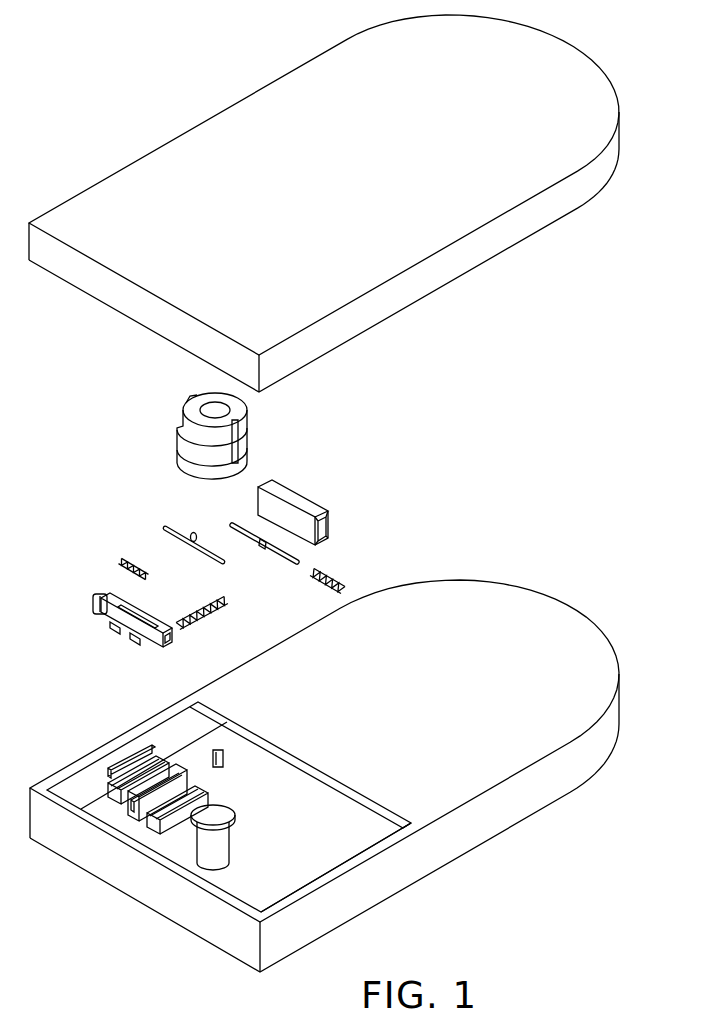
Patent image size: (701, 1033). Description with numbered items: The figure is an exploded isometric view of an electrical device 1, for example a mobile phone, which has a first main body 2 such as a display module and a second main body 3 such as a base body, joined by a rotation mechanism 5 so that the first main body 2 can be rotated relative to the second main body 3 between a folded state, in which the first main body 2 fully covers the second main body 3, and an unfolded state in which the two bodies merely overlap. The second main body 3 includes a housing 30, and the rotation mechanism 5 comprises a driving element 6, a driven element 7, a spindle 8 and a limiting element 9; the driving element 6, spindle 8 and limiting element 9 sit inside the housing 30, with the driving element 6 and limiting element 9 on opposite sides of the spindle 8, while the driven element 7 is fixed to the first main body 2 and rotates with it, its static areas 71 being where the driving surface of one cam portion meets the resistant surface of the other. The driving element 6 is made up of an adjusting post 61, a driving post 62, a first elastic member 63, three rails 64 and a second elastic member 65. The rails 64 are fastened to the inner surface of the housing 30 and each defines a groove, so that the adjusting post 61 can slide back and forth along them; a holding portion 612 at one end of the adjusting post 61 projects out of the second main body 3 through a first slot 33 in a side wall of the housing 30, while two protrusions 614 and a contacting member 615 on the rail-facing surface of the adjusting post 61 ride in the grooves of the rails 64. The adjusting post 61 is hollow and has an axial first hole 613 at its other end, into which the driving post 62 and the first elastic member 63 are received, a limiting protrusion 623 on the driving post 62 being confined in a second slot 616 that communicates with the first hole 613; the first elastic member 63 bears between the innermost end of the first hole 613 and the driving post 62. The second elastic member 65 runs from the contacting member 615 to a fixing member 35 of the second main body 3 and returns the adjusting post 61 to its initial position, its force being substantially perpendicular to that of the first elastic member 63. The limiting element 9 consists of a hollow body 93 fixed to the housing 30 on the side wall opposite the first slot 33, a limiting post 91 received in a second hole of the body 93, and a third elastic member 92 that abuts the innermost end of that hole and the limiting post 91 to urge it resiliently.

The electrical device 1 is at (101, 45).
The first main body 2 is at (557, 88).
The second main body 3 is at (560, 663).
The housing 30 is at (337, 825).
The first slot 33 is at (123, 767).
The fixing member 35 is at (213, 748).
The rotation mechanism 5 is at (70, 460).
The driving element 6 is at (24, 573).
The adjusting post 61 is at (93, 589).
The holding portion 612 is at (92, 607).
The first hole 613 is at (173, 645).
The protrusion 614 is at (110, 627).
The contacting member 615 is at (132, 642).
The second slot 616 is at (150, 623).
The driving post 62 is at (173, 527).
The limiting protrusion 623 is at (192, 533).
The first elastic member 63 is at (120, 562).
The rails 64 is at (128, 793).
The second elastic member 65 is at (207, 603).
The driven element 7 is at (192, 412).
The static areas 71 is at (195, 398).
The spindle 8 is at (207, 843).
The limiting element 9 is at (393, 490).
The limiting post 91 is at (298, 560).
The third elastic member 92 is at (335, 582).
The body 93 is at (322, 513).